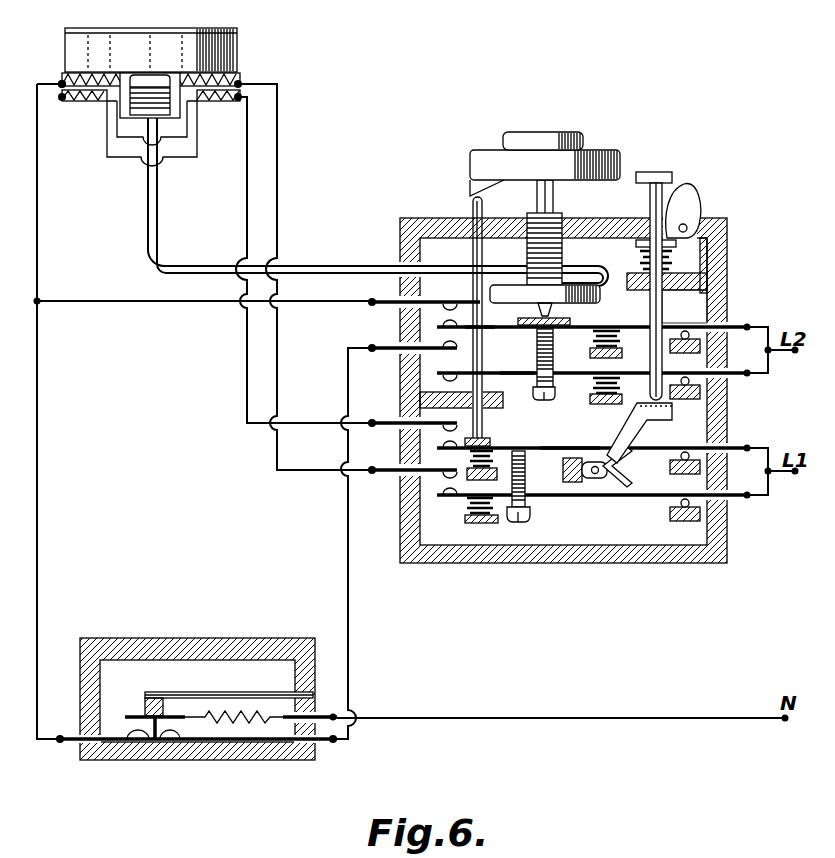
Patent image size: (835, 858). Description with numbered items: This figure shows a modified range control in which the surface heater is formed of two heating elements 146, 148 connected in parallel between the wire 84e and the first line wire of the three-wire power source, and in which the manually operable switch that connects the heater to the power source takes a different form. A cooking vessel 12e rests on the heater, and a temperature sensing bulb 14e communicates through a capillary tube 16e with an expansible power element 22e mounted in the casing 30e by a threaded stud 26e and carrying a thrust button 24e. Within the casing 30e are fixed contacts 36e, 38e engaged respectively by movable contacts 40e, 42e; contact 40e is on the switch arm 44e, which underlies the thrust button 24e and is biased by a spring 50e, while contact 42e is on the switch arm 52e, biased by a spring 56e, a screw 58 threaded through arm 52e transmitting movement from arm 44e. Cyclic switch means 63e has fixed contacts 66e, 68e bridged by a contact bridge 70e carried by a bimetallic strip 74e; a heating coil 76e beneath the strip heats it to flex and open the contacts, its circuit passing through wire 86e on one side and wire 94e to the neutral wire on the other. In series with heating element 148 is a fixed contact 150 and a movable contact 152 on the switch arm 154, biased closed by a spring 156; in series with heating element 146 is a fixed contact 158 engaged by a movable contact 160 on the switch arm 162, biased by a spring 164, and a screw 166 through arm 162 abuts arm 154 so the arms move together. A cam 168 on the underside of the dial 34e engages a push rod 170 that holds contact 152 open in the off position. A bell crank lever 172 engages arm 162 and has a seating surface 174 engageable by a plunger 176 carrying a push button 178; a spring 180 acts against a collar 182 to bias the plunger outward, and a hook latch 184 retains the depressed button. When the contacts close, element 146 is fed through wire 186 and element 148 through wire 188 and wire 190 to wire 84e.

The cooking vessel 12e is at (200, 36).
The temperature sensing bulb 14e is at (153, 76).
The capillary tube 16e is at (220, 265).
The expansible power element 22e is at (602, 276).
The thrust button 24e is at (567, 317).
The stud 26e is at (560, 211).
The casing 30e is at (712, 281).
The dial 34e is at (562, 124).
The fixed contact 36e is at (462, 296).
The fixed contact 38e is at (438, 349).
The movable contact 40e is at (420, 328).
The movable contact 42e is at (438, 376).
The switch arm 44e is at (480, 330).
The spring 50e is at (614, 342).
The switch arm 52e is at (533, 375).
The spring 56e is at (592, 385).
The screw 58 is at (548, 352).
The cyclic switch means 63e is at (202, 634).
The fixed contact 66e is at (130, 738).
The fixed contact 68e is at (197, 738).
The contact bridge 70e is at (157, 745).
The bimetallic strip 74e is at (222, 692).
The heating coil 76e is at (285, 692).
The wire 84e is at (39, 350).
The wire 86e is at (135, 300).
The wire 94e is at (579, 714).
The heating element 146 is at (240, 77).
The heating element 148 is at (236, 101).
The fixed contact 150 is at (440, 427).
The movable contact 152 is at (440, 449).
The switch arm 154 is at (565, 447).
The spring 156 is at (534, 425).
The fixed contact 158 is at (440, 474).
The movable contact 160 is at (440, 497).
The switch arm 162 is at (562, 494).
The spring 164 is at (468, 505).
The screw 166 is at (518, 467).
The cam 168 is at (470, 178).
The push rod 170 is at (470, 198).
The bell crank lever 172 is at (639, 427).
The seating surface 174 is at (665, 407).
The plunger 176 is at (703, 302).
The push button 178 is at (653, 172).
The spring 180 is at (700, 258).
The collar 182 is at (705, 243).
The hook latch 184 is at (691, 192).
The wire 186 is at (277, 182).
The wire 188 is at (247, 184).
The wire 190 is at (58, 78).